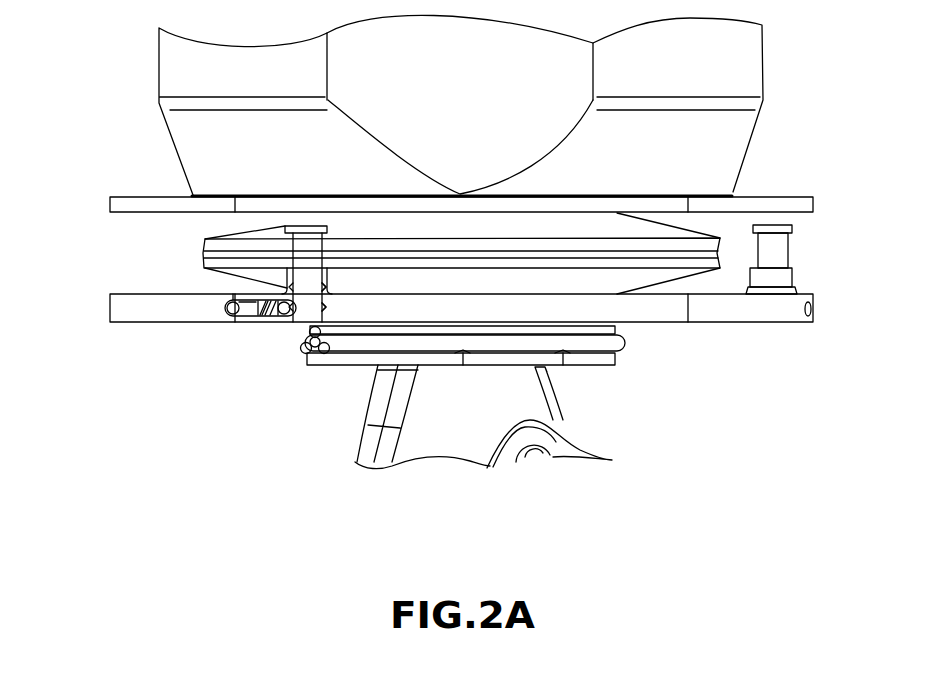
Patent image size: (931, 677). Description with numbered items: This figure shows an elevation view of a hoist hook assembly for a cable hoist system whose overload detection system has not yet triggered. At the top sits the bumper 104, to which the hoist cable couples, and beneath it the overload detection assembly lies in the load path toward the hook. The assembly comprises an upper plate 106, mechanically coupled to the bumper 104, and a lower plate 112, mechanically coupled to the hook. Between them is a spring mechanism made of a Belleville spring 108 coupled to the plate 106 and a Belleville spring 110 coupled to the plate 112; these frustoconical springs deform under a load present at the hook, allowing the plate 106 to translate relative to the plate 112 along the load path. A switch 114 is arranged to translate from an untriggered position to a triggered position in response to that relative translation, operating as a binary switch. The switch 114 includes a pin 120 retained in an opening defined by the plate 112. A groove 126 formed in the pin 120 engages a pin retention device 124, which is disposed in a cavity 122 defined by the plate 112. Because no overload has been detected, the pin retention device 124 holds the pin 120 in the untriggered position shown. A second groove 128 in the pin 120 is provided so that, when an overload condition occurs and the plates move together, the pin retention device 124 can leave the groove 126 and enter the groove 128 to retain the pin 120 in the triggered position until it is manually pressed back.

The bumper 104 is at (748, 50).
The plate 106 is at (782, 203).
The Belleville spring 108 is at (267, 225).
The Belleville spring 110 is at (253, 276).
The plate 112 is at (733, 306).
The switch 114 is at (788, 279).
The pin 120 is at (772, 253).
The cavity 122 is at (258, 315).
The pin retention device 124 is at (240, 314).
The groove 126 is at (327, 307).
The groove 128 is at (327, 287).